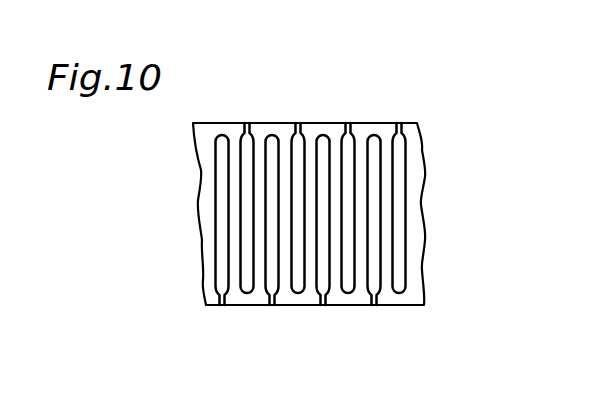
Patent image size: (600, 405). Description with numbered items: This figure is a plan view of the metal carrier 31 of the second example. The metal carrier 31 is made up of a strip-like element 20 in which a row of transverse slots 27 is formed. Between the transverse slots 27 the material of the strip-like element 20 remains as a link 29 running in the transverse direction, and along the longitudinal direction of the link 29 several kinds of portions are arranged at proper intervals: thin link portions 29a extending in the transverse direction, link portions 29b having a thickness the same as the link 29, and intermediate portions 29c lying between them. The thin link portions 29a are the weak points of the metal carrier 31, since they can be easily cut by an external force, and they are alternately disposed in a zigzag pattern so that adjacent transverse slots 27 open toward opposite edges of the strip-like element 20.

The strip-like element 20 is at (283, 300).
The transverse slots 27 is at (398, 212).
The link 29 is at (410, 144).
The thin link portions 29a is at (402, 127).
The link portions 29b is at (360, 127).
The intermediate portions 29c is at (378, 127).
The metal carrier 31 is at (182, 258).